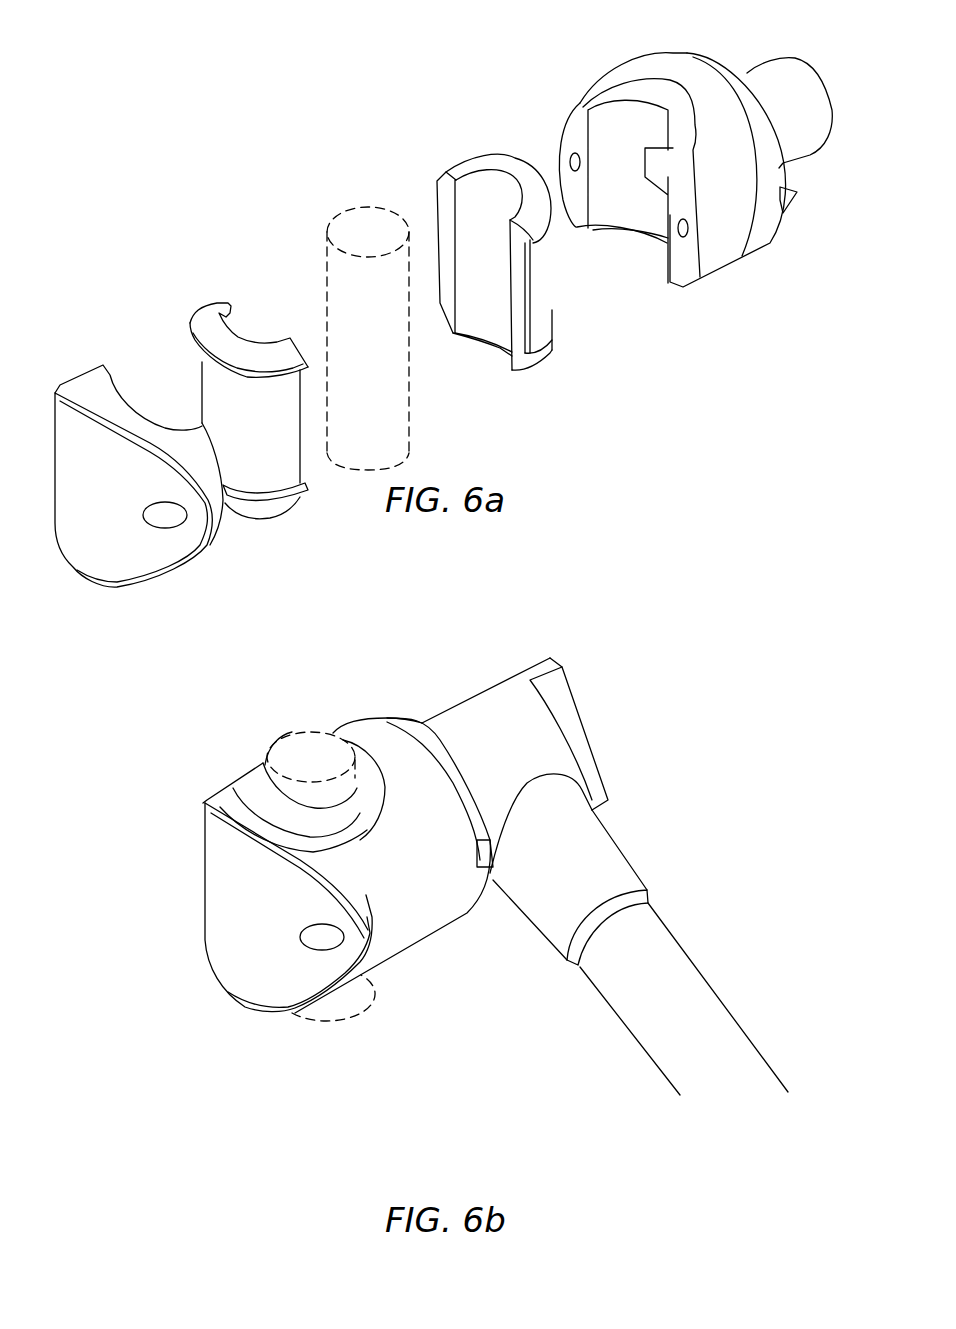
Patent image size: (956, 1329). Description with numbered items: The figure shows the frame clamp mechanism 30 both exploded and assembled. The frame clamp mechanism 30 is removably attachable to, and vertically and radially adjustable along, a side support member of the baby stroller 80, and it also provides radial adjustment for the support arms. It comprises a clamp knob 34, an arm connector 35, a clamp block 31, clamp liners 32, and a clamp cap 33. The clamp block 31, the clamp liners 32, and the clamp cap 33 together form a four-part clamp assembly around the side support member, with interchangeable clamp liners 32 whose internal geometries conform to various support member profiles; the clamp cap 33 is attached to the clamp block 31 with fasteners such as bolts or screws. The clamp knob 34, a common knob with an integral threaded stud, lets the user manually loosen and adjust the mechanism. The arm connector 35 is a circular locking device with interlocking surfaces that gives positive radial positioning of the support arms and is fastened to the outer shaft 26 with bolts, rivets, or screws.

In FIG. 6B, the outer shaft 26 is at (670, 980).
In FIG. 6A, the frame clamp mechanism 30 is at (128, 156).
In FIG. 6B, the frame clamp mechanism 30 is at (714, 784).
In FIG. 6A, the clamp block 31 is at (655, 68).
In FIG. 6B, the clamp block 31 is at (420, 853).
In FIG. 6A, the clamp liners 32 is at (208, 323).
In FIG. 6B, the clamp liners 32 is at (260, 787).
In FIG. 6A, the clamp cap 33 is at (132, 550).
In FIG. 6B, the clamp cap 33 is at (240, 892).
In FIG. 6B, the clamp knob 34 is at (558, 692).
In FIG. 6B, the arm connector 35 is at (490, 727).
In FIG. 6A, the baby stroller 80 is at (352, 223).
In FIG. 6B, the baby stroller 80 is at (290, 753).